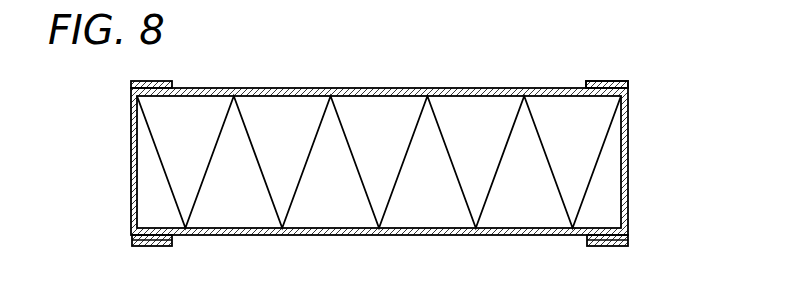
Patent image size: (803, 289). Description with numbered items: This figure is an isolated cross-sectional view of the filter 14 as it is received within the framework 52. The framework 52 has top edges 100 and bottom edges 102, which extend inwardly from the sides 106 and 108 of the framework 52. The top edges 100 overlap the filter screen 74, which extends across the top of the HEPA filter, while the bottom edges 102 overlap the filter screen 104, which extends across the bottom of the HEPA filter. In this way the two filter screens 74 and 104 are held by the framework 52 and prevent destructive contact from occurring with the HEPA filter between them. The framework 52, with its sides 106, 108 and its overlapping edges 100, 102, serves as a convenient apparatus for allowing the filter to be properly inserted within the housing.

The filter 14 is at (383, 167).
The framework 52 is at (610, 81).
The filter screen 74 is at (320, 89).
The top edges 100 is at (170, 82).
The bottom edges 102 is at (136, 247).
The filter screen 104 is at (450, 236).
The side 106 is at (628, 138).
The side 108 is at (129, 158).